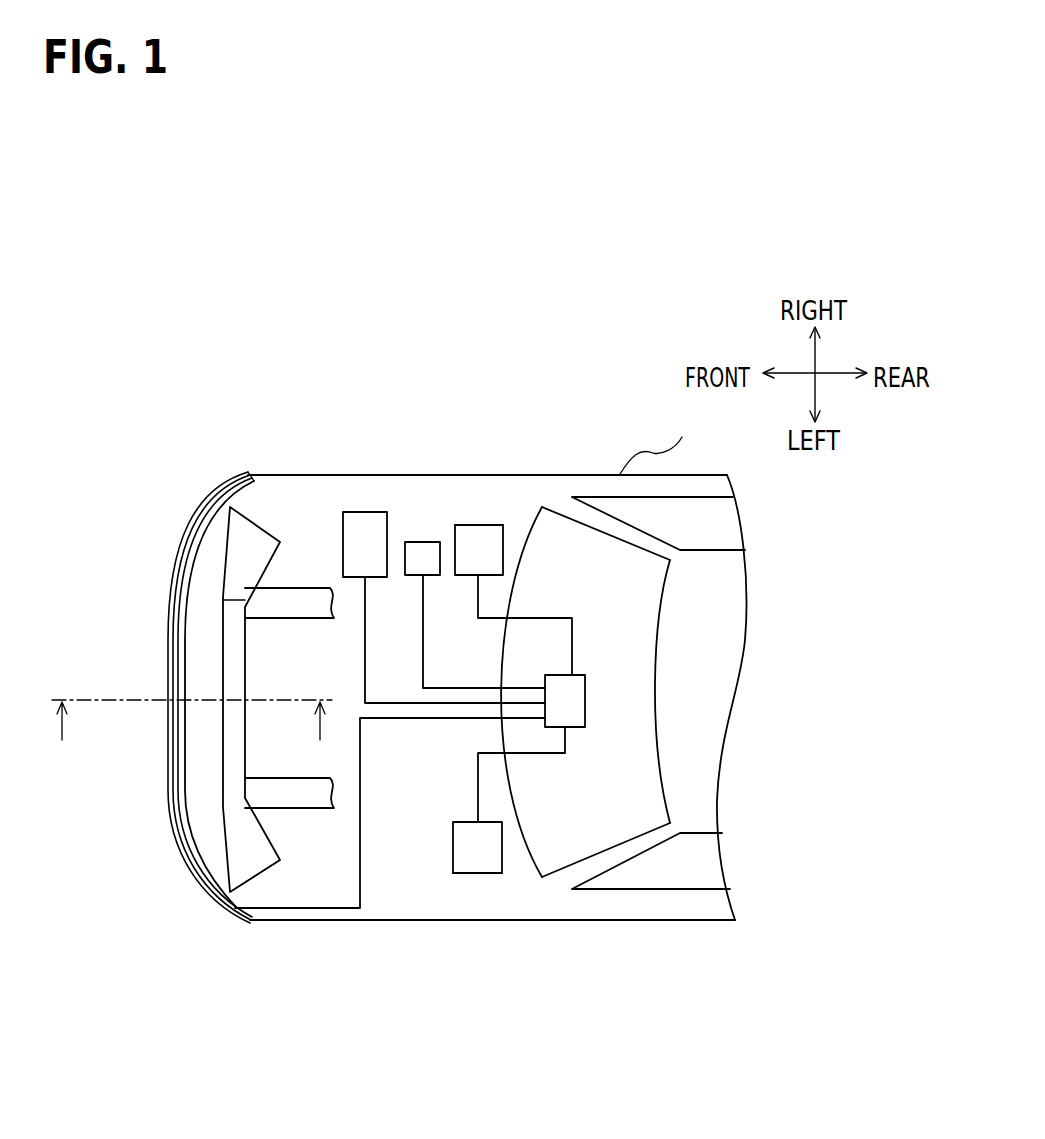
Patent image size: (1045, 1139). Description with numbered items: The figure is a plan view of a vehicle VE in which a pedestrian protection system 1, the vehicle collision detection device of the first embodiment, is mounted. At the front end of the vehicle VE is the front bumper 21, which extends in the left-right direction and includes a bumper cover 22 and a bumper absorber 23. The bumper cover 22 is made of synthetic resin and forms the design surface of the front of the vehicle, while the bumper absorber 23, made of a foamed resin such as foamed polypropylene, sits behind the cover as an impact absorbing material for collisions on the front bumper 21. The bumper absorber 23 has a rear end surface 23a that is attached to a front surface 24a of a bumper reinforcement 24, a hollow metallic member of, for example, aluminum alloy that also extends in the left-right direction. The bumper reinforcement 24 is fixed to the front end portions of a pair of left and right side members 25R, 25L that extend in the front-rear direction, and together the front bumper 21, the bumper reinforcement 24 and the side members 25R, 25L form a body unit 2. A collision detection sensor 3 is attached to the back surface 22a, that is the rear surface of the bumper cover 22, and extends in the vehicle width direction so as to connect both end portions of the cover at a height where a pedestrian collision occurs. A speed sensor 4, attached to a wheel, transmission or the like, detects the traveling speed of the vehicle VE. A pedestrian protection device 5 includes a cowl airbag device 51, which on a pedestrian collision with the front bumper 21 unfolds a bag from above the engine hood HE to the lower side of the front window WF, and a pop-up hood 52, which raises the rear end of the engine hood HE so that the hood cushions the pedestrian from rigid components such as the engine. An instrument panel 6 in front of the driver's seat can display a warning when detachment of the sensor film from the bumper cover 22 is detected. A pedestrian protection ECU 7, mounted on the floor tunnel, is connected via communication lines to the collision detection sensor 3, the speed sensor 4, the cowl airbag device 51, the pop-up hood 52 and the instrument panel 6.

The pedestrian protection system 1 is at (547, 1002).
The body unit 2 is at (190, 927).
The collision detection sensor 3 is at (168, 712).
The speed sensor 4 is at (415, 542).
The pedestrian protection device 5 is at (498, 525).
The cowl airbag device 51 is at (463, 525).
The pop-up hood 52 is at (477, 873).
The instrument panel 6 is at (365, 512).
The pedestrian protection ECU 7 is at (587, 690).
The front bumper 21 is at (168, 782).
The bumper cover 22 is at (180, 858).
The back surface 22a is at (185, 650).
The bumper absorber 23 is at (200, 545).
The rear end surface 23a is at (275, 542).
The bumper reinforcement 24 is at (232, 633).
The front surface 24a is at (225, 607).
The right side member 25R is at (278, 597).
The left side member 25L is at (302, 798).
The vehicle VE is at (658, 438).
The engine hood HE is at (403, 907).
The front window WF is at (618, 820).